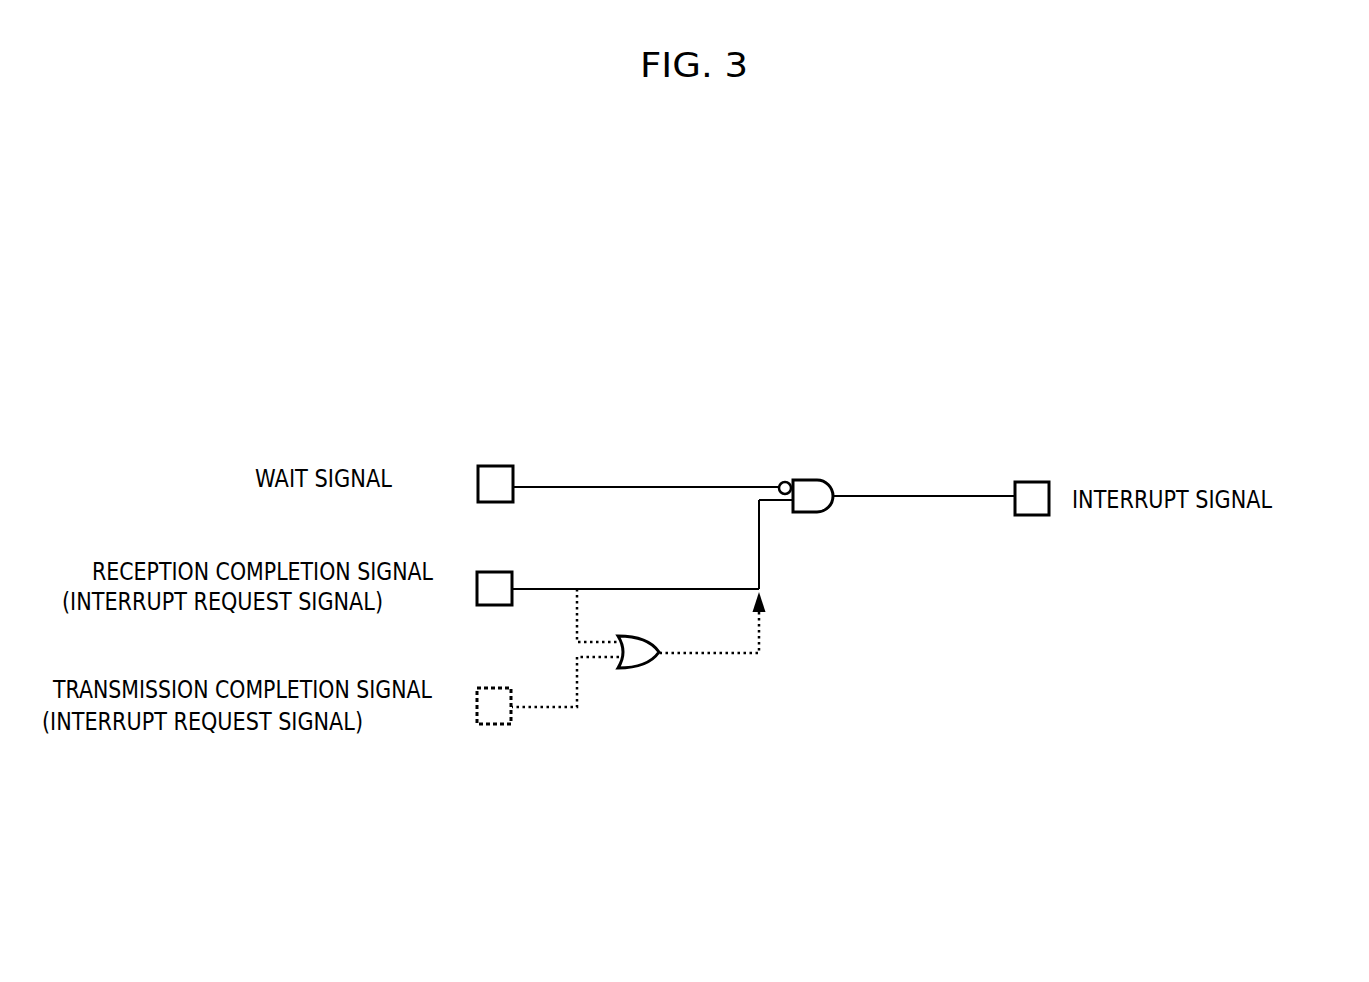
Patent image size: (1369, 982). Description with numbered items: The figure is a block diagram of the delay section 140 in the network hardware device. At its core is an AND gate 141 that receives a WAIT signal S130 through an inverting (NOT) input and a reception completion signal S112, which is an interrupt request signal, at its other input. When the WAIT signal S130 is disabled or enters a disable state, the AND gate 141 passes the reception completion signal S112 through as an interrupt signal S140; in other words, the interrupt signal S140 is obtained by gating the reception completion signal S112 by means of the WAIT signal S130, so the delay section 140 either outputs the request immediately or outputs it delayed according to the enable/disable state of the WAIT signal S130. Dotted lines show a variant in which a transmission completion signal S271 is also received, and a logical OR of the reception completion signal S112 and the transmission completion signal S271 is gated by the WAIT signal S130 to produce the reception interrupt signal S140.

The delay section 140 is at (892, 394).
The AND gate 141 is at (796, 481).
The WAIT signal S130 is at (599, 484).
The reception completion signal S112 is at (588, 594).
The transmission completion signal S271 is at (453, 712).
The interrupt signal S140 is at (1093, 498).